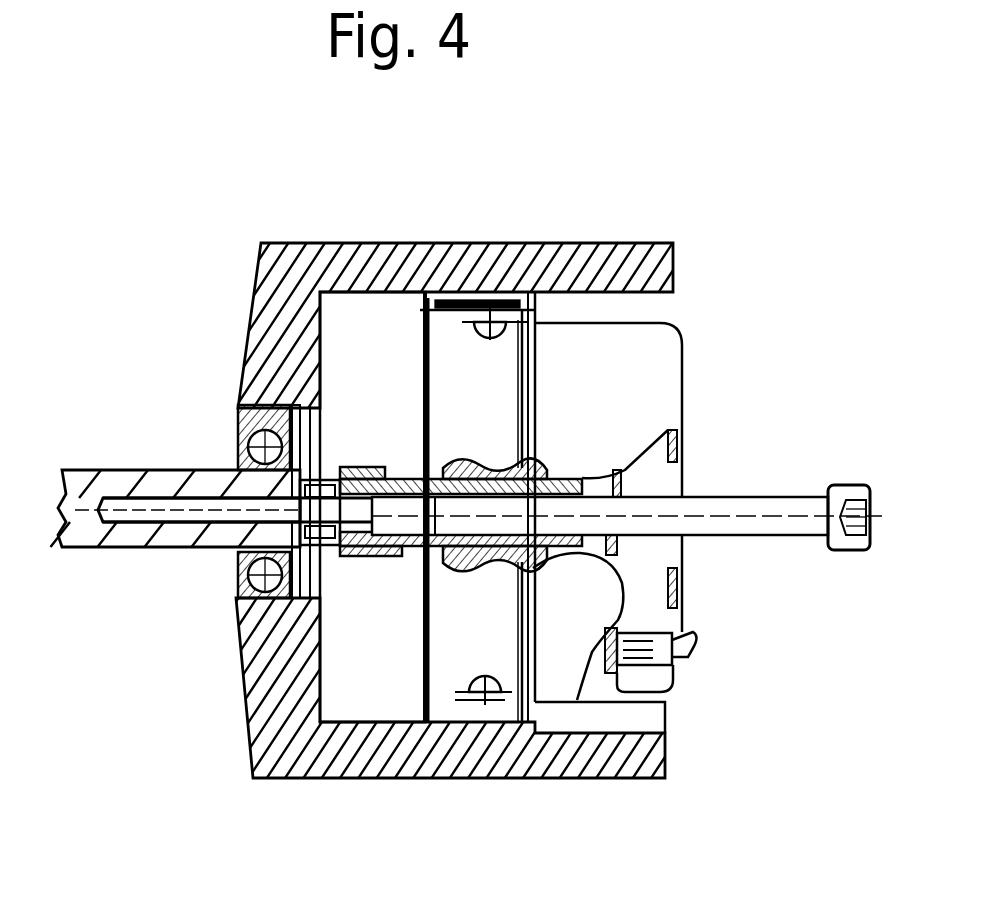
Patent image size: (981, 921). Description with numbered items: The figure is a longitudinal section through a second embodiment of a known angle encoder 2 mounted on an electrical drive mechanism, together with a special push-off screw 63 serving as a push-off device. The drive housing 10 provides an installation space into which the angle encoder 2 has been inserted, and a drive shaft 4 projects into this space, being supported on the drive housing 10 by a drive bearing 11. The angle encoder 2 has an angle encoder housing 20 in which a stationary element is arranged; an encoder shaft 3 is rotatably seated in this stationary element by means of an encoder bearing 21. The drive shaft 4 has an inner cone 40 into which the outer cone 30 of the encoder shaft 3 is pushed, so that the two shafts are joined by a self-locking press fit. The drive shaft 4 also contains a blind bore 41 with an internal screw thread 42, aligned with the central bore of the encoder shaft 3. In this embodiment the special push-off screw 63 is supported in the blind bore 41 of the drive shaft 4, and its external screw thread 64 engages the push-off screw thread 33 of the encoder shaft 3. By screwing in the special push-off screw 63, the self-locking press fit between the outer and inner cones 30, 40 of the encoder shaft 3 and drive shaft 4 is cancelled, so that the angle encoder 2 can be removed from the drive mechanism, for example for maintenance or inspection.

The angle encoder 2 is at (696, 325).
The encoder shaft 3 is at (542, 462).
The drive shaft 4 is at (105, 538).
The drive housing 10 is at (500, 270).
The drive bearing 11 is at (240, 405).
The angle encoder housing 20 is at (677, 692).
The encoder bearing 21 is at (472, 566).
The outer cone 30 is at (372, 556).
The push-off screw thread 33 is at (395, 556).
The inner cone 40 is at (356, 478).
The blind bore 41 is at (130, 497).
The internal screw thread 42 is at (225, 540).
The special push-off screw 63 is at (722, 503).
The external screw thread 64 is at (404, 479).